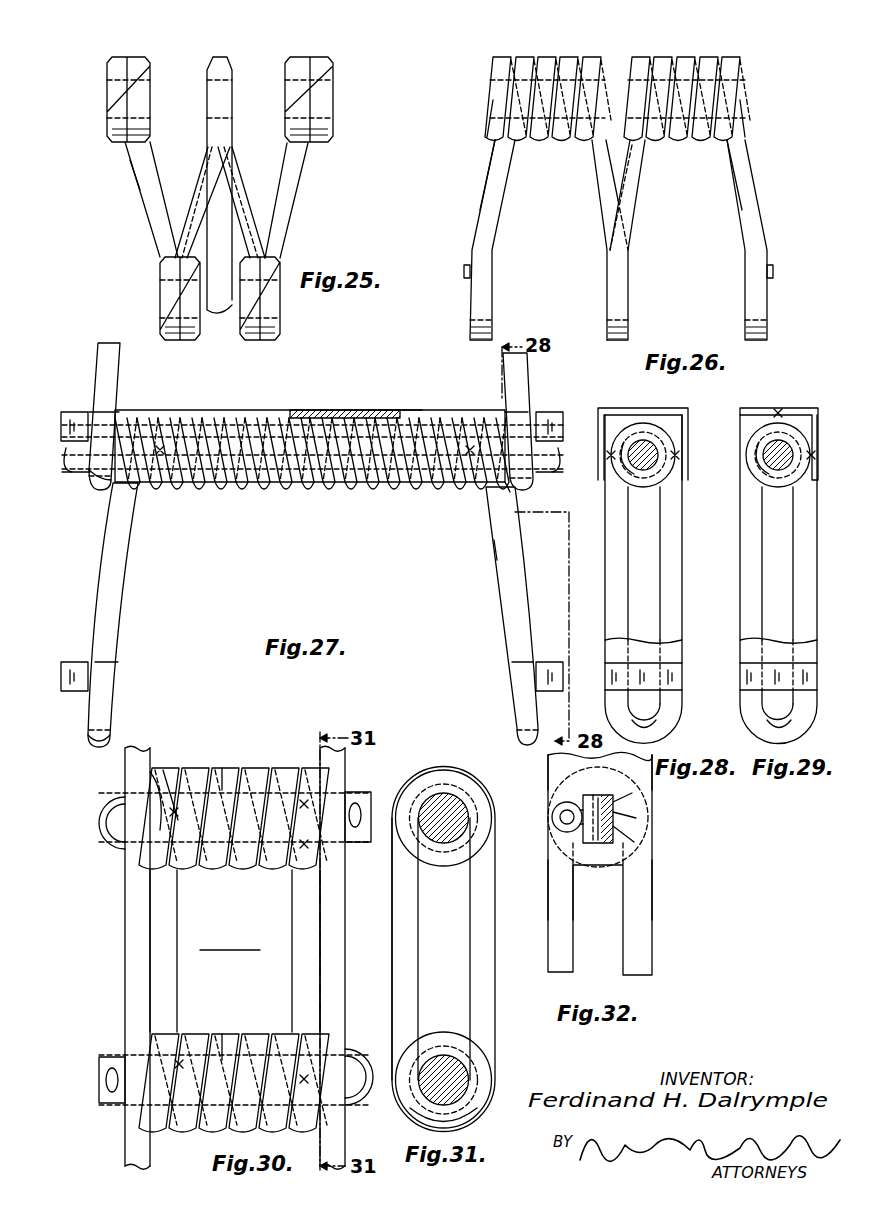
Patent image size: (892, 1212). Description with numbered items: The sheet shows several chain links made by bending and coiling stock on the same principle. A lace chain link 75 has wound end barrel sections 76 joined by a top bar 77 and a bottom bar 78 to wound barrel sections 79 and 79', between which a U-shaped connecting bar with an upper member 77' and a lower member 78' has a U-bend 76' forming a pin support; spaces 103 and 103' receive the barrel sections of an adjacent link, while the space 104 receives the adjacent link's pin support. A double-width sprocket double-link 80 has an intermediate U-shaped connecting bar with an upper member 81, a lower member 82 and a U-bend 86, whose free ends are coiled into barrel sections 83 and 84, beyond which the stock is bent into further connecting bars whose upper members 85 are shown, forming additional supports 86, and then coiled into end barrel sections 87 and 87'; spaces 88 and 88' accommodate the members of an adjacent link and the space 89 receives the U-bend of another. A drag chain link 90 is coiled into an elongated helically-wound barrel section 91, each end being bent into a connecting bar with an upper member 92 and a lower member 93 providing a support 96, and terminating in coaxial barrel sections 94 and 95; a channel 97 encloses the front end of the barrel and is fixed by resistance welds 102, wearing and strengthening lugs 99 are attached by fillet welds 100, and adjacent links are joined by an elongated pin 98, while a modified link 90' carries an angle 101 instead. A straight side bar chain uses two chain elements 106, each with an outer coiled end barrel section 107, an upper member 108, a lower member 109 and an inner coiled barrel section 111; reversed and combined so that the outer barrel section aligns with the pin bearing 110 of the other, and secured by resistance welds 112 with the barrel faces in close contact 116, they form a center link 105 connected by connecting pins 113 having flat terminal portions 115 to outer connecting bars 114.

In FIG. 25, the link 75 is at (145, 199).
In FIG. 25, the wound end barrel sections 76 is at (220, 79).
In FIG. 25, the U-bend pin support 76' is at (221, 165).
In FIG. 25, the top bar 77 is at (298, 200).
In FIG. 25, the upper member 77' is at (201, 202).
In FIG. 25, the bottom bar 78 is at (121, 173).
In FIG. 25, the lower member 78' is at (247, 202).
In FIG. 25, the wound barrel section 79 is at (261, 311).
In FIG. 25, the wound barrel section 79' is at (182, 311).
In FIG. 26, the double-link 80 is at (772, 174).
In FIG. 26, the upper member 81 is at (640, 204).
In FIG. 26, the lower member 82 is at (602, 198).
In FIG. 26, the barrel section 83 is at (690, 57).
In FIG. 26, the barrel section 84 is at (553, 57).
In FIG. 26, the upper members 85 is at (478, 212).
In FIG. 26, the U-bend connecting-pin supports 86 is at (470, 335).
In FIG. 26, the end barrel section 87 is at (766, 118).
In FIG. 26, the end barrel section 87' is at (469, 116).
In FIG. 26, the space 88 is at (707, 302).
In FIG. 26, the space 88' is at (553, 302).
In FIG. 26, the space 89 is at (616, 110).
In FIG. 27, the drag chain link 90 is at (481, 559).
In FIG. 28, the drag chain link 90 is at (644, 603).
In FIG. 29, the drag chain link 90' is at (778, 603).
In FIG. 27, the elongated helically-wound barrel section 91 is at (330, 494).
In FIG. 28, the elongated helically-wound barrel section 91 is at (610, 478).
In FIG. 29, the elongated helically-wound barrel section 91 is at (748, 466).
In FIG. 27, the upper member 92 is at (110, 348).
In FIG. 28, the upper member 92 is at (612, 575).
In FIG. 29, the upper member 92 is at (746, 580).
In FIG. 28, the lower member 93 is at (672, 578).
In FIG. 29, the lower member 93 is at (805, 578).
In FIG. 27, the barrel section 94 is at (132, 455).
In FIG. 27, the terminal barrel section 95 is at (518, 494).
In FIG. 28, the terminal barrel section 95 is at (641, 488).
In FIG. 29, the terminal barrel section 95 is at (776, 488).
In FIG. 27, the support 96 is at (76, 470).
In FIG. 28, the support 96 is at (665, 725).
In FIG. 29, the support 96 is at (800, 725).
In FIG. 27, the channel 97 is at (392, 410).
In FIG. 28, the channel 97 is at (660, 409).
In FIG. 27, the elongated pin 98 is at (312, 412).
In FIG. 28, the elongated pin 98 is at (660, 450).
In FIG. 29, the elongated pin 98 is at (800, 463).
In FIG. 27, the wearing and strengthening lugs 99 is at (78, 418).
In FIG. 28, the wearing and strengthening lugs 99 is at (684, 680).
In FIG. 29, the wearing and strengthening lugs 99 is at (812, 678).
In FIG. 27, the fillet welds 100 is at (98, 398).
In FIG. 28, the fillet welds 100 is at (684, 648).
In FIG. 29, the fillet welds 100 is at (814, 652).
In FIG. 29, the angle 101 is at (772, 399).
In FIG. 27, the resistance welds 102 is at (160, 450).
In FIG. 28, the resistance welds 102 is at (680, 455).
In FIG. 29, the resistance welds 102 is at (785, 408).
In FIG. 25, the space 103 is at (271, 53).
In FIG. 25, the space 103' is at (186, 52).
In FIG. 25, the space 104 is at (224, 312).
In FIG. 30, the center link 105 is at (231, 933).
In FIG. 31, the center link 105 is at (443, 949).
In FIG. 32, the center link 105 is at (600, 863).
In FIG. 30, the chain elements 106 is at (138, 958).
In FIG. 31, the chain elements 106 is at (452, 918).
In FIG. 32, the chain elements 106 is at (612, 924).
In FIG. 30, the outer coiled end barrel section 107 is at (152, 775).
In FIG. 31, the outer coiled end barrel section 107 is at (470, 1112).
In FIG. 30, the upper member 108 is at (177, 935).
In FIG. 31, the upper member 108 is at (396, 948).
In FIG. 32, the upper member 108 is at (552, 946).
In FIG. 31, the lower member 109 is at (488, 973).
In FIG. 32, the lower member 109 is at (652, 938).
In FIG. 30, the pin bearing 110 is at (232, 866).
In FIG. 31, the pin bearing 110 is at (445, 793).
In FIG. 32, the pin bearing 110 is at (583, 832).
In FIG. 30, the inner coiled barrel section 111 is at (227, 768).
In FIG. 31, the inner coiled barrel section 111 is at (441, 866).
In FIG. 32, the inner coiled barrel section 111 is at (645, 792).
In FIG. 30, the resistance welds 112 is at (170, 812).
In FIG. 30, the connecting pins 113 is at (348, 792).
In FIG. 31, the connecting pins 113 is at (456, 784).
In FIG. 32, the connecting pins 113 is at (556, 808).
In FIG. 30, the outer connecting bars 114 is at (345, 768).
In FIG. 32, the outer connecting bars 114 is at (558, 770).
In FIG. 30, the flat terminal portions 115 is at (357, 842).
In FIG. 32, the flat terminal portions 115 is at (628, 836).
In FIG. 30, the close contact 116 is at (175, 780).